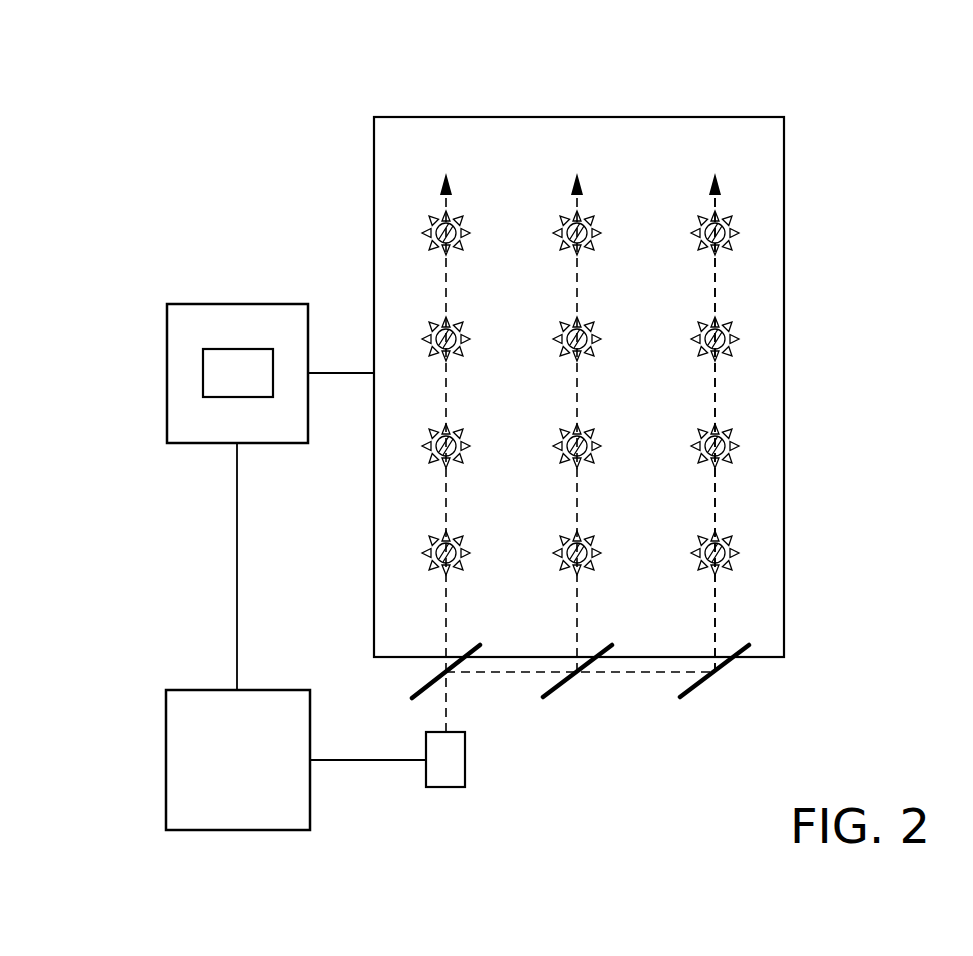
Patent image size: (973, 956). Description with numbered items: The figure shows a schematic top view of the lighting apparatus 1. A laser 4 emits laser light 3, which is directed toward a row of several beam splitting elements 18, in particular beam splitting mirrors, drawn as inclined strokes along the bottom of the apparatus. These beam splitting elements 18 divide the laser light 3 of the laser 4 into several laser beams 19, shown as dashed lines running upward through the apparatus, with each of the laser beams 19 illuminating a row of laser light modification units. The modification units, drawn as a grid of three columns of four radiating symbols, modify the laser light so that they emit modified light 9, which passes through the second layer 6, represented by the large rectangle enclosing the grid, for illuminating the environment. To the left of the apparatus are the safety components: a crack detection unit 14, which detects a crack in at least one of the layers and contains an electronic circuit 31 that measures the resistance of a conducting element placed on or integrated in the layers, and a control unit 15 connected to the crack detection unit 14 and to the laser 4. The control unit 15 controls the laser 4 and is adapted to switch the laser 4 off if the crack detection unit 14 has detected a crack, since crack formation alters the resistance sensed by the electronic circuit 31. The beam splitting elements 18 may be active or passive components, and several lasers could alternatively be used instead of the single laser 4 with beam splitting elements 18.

The lighting apparatus 1 is at (274, 124).
The laser light 3 is at (447, 707).
The laser 4 is at (445, 759).
The second layer 6 is at (785, 387).
The modified light 9 is at (726, 336).
The crack detection unit 14 is at (237, 304).
The control unit 15 is at (238, 760).
The beam splitting elements 18 is at (553, 690).
The laser beams 19 is at (715, 503).
The electronic circuit 31 is at (238, 373).